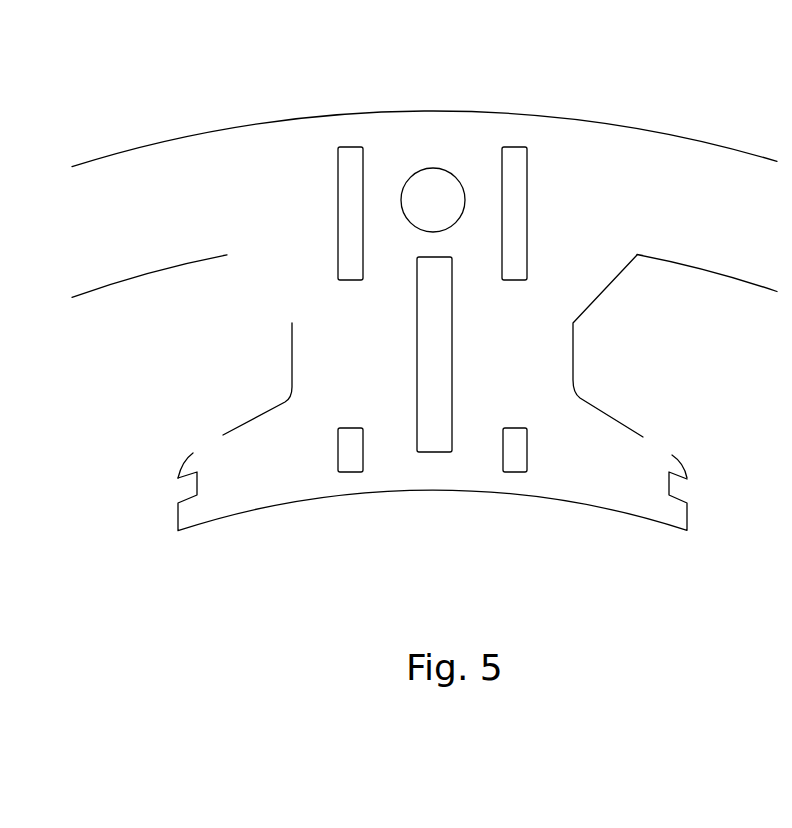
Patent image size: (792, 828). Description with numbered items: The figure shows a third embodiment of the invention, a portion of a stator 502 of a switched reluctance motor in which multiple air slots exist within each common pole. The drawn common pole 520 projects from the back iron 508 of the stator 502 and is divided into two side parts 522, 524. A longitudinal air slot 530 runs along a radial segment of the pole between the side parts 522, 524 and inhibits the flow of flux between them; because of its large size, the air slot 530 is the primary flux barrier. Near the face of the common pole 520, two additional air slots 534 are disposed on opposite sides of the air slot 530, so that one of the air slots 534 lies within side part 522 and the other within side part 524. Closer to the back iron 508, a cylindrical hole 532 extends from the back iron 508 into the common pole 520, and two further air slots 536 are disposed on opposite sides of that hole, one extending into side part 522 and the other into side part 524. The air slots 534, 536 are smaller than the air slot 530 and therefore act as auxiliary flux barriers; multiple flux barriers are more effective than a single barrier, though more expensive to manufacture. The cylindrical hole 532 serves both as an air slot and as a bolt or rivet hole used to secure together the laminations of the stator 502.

The stator 502 is at (720, 148).
The back iron 508 is at (199, 215).
The common pole 520 is at (217, 518).
The side part 522 is at (337, 347).
The side part 524 is at (530, 377).
The longitudinal air slot 530 is at (432, 427).
The cylindrical hole 532 is at (430, 198).
The air slots 534 is at (347, 452).
The air slots 536 is at (350, 167).